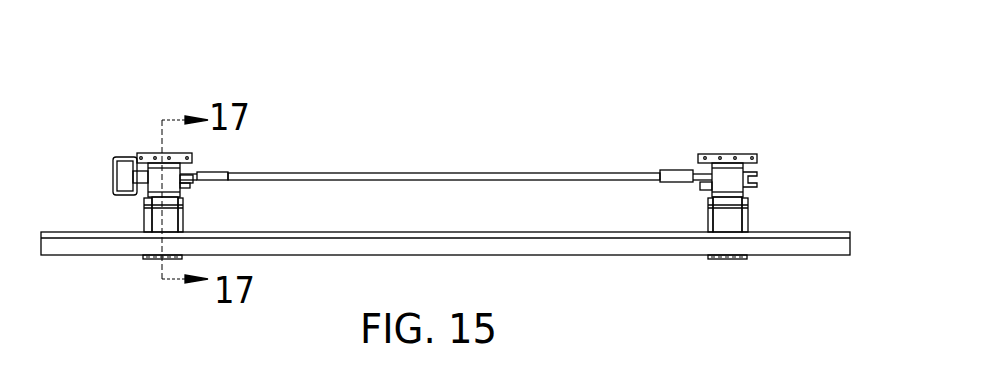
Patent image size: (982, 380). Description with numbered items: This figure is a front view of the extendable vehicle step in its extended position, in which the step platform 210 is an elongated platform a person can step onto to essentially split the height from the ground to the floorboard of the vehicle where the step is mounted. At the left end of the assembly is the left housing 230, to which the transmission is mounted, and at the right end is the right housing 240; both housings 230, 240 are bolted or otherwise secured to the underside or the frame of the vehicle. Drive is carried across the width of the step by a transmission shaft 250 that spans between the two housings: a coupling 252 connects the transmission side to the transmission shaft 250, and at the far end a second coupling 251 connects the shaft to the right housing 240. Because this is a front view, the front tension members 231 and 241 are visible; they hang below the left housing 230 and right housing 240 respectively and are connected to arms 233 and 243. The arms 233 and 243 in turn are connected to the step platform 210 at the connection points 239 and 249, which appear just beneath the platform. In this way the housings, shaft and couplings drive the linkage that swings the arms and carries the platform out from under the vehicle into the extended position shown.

The step platform 210 is at (622, 255).
The left housing 230 is at (166, 176).
The front tension member 231 is at (172, 189).
The arm 233 is at (144, 218).
The connection of arm to step platform 239 is at (148, 259).
The right housing 240 is at (744, 209).
The front tension member 241 is at (740, 192).
The arm 243 is at (745, 218).
The connection of arm to step platform 249 is at (722, 259).
The transmission shaft 250 is at (517, 173).
The coupling 251 is at (670, 172).
The coupling 252 is at (228, 173).